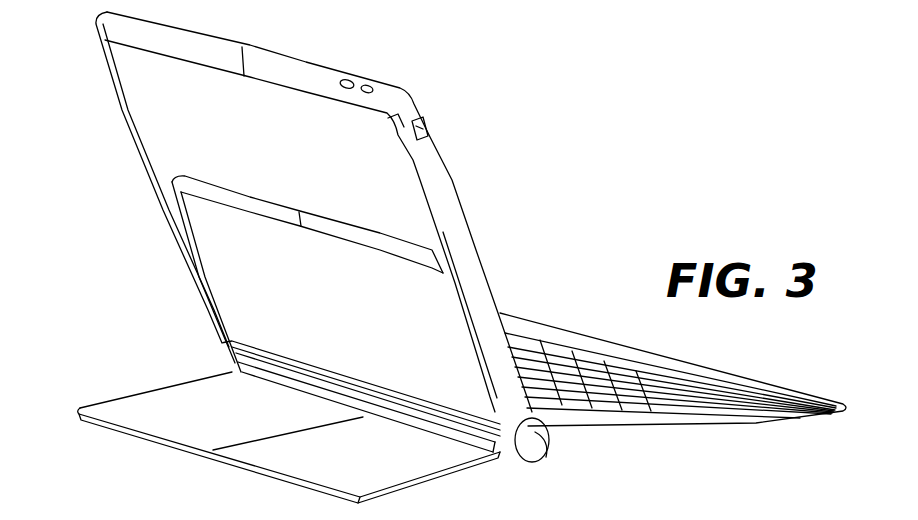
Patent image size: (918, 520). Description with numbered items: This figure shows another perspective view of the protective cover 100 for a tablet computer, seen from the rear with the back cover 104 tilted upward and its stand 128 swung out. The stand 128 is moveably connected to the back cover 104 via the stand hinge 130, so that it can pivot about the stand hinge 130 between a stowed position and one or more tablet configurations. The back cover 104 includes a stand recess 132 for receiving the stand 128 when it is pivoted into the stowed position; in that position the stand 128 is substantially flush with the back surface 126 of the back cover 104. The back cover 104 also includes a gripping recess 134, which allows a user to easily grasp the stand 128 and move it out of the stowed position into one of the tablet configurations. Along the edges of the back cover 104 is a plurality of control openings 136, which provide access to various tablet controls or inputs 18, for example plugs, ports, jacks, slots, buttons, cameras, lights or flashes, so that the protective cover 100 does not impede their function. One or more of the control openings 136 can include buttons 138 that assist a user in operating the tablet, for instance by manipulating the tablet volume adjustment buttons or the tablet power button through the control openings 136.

The protective cover 100 is at (582, 214).
The back cover 104 is at (114, 129).
The tablet controls or inputs 18 is at (447, 62).
The back surface 126 is at (157, 170).
The stand 128 is at (140, 413).
The stand hinge 130 is at (240, 373).
The stand recess 132 is at (243, 276).
The gripping recess 134 is at (190, 193).
The control openings 136 is at (364, 87).
The buttons 138 is at (421, 140).